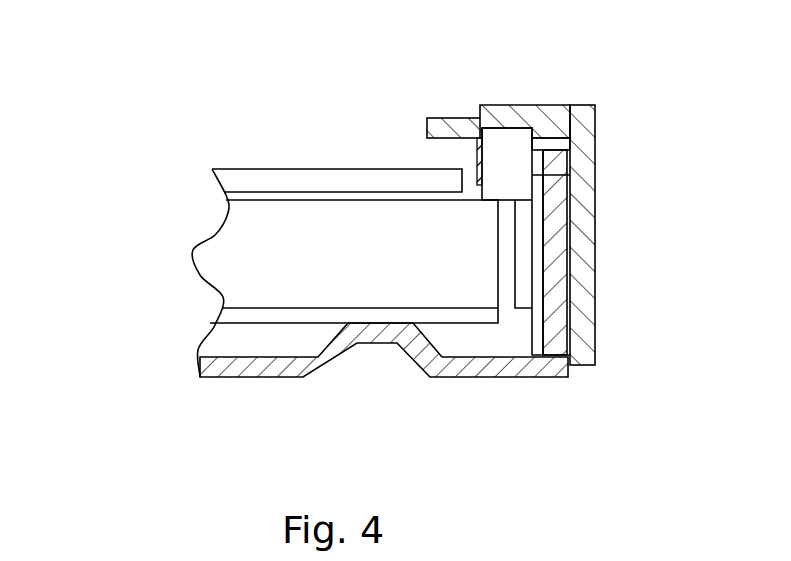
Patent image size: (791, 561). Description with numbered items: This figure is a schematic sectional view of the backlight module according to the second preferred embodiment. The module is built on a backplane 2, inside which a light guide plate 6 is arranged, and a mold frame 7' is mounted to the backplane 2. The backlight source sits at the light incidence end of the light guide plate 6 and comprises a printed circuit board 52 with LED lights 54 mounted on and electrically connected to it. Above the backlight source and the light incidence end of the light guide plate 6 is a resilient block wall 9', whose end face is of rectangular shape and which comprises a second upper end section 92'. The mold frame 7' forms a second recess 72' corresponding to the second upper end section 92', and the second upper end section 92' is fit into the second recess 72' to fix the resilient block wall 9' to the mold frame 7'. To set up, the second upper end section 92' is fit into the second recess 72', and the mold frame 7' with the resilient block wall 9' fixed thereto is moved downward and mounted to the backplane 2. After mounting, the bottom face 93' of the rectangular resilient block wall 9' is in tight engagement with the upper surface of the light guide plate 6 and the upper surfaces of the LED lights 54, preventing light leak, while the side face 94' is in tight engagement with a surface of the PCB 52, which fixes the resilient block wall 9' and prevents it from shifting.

The backplane 2 is at (300, 372).
The light guide plate 6 is at (237, 258).
The mold frame 7' is at (623, 224).
The resilient block wall 9' is at (423, 127).
The printed circuit board 52 is at (538, 335).
The LED lights 54 is at (523, 280).
The second recess 72' is at (506, 78).
The second upper end section 92' is at (437, 105).
The bottom face 93' is at (606, 252).
The side face 94' is at (613, 156).